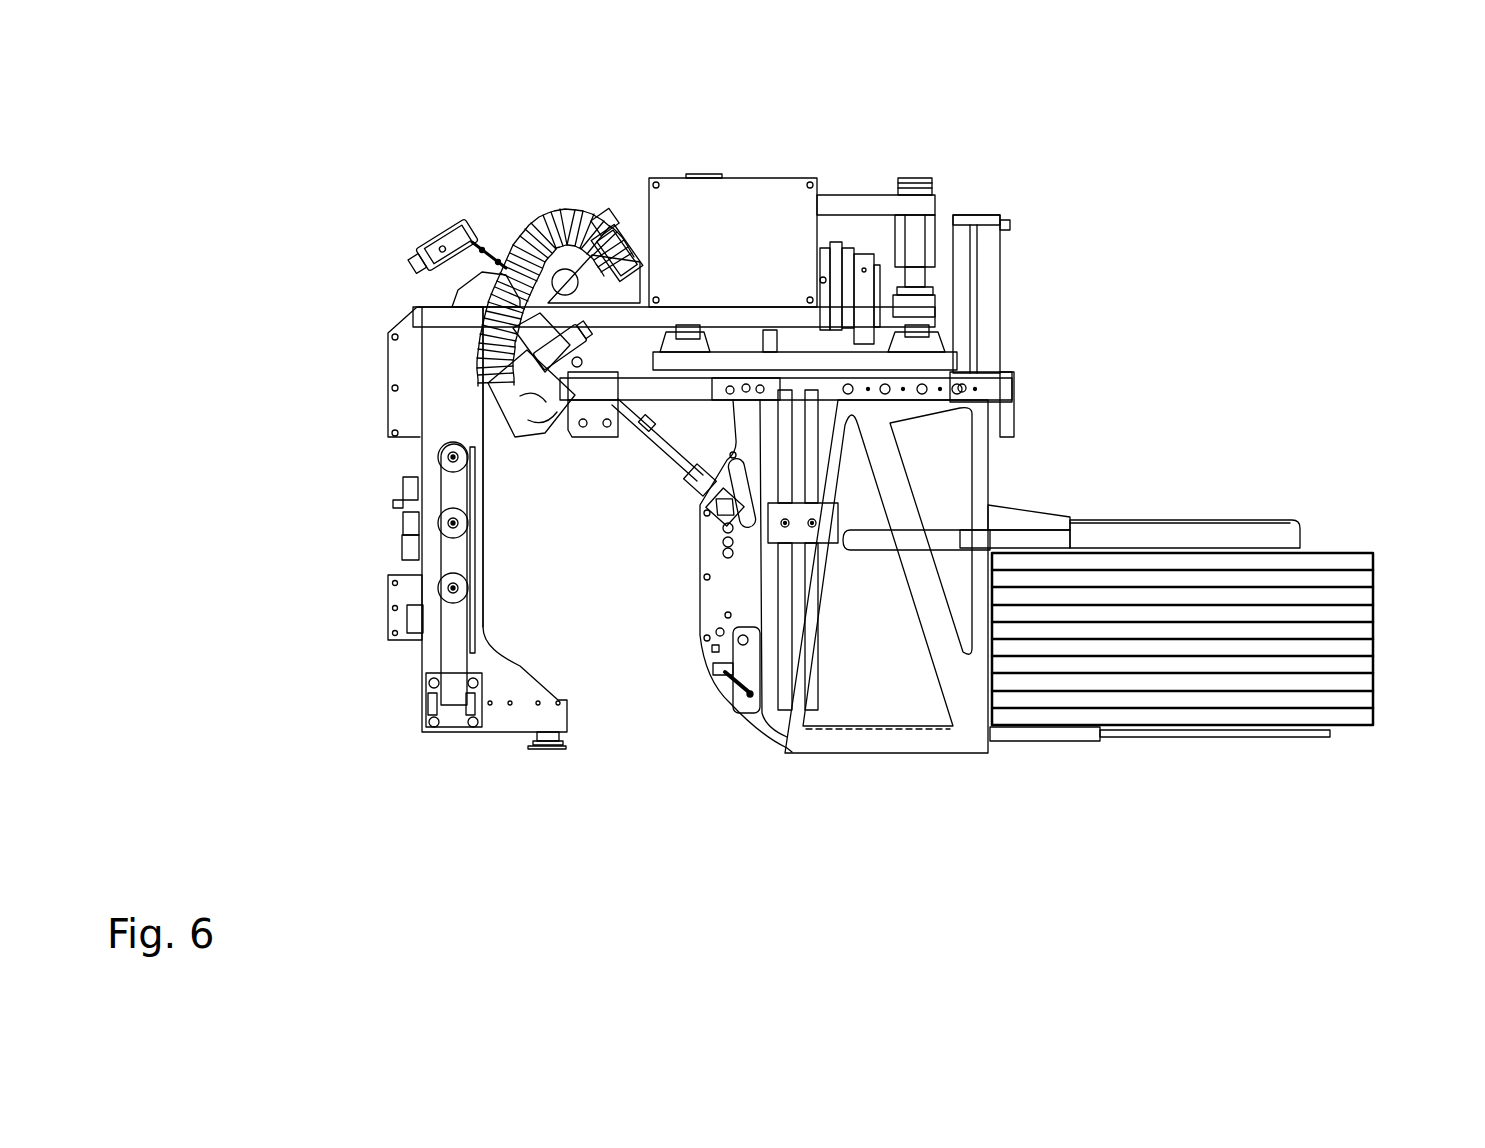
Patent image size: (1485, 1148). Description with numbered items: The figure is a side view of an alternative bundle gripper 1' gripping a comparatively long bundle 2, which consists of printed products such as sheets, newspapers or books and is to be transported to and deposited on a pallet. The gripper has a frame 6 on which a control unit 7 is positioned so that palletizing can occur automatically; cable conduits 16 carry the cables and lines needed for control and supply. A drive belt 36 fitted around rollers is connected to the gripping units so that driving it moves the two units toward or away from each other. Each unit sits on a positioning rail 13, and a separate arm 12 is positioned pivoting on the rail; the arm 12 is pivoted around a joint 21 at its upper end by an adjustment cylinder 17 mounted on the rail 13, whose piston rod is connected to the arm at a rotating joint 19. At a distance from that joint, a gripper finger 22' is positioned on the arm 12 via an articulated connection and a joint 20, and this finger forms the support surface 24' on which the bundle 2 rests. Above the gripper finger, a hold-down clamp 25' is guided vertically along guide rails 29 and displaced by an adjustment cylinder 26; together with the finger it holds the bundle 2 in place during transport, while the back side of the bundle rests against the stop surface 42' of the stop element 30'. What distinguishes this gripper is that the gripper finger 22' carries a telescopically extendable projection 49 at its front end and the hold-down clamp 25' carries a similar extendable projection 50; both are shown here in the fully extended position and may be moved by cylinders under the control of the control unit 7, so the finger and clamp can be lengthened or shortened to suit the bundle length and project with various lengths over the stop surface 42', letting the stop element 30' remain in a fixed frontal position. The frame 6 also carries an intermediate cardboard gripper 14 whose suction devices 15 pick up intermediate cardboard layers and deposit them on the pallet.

The bundle gripper 1' is at (333, 116).
The bundle 2 is at (1318, 550).
The frame 6 is at (846, 195).
The control unit 7 is at (672, 178).
The arm 12 is at (698, 597).
The positioning rail 13 is at (597, 378).
The intermediate cardboard gripper 14 is at (425, 694).
The suction device 15 is at (450, 462).
The cable conduit 16 is at (560, 227).
The adjustment cylinder 17 is at (450, 225).
The joint 19 is at (705, 505).
The joint 20 is at (740, 643).
The joint 21 is at (740, 398).
The gripper finger 22' is at (729, 729).
The support surface 24' is at (1325, 660).
The hold-down clamp 25' is at (980, 489).
The adjustment cylinder 26 is at (1000, 280).
The guide rail 29 is at (812, 447).
The stop element 30' is at (886, 618).
The drive belt 36 is at (866, 312).
The stop surface 42' is at (1057, 735).
The projection 49 is at (1240, 740).
The projection 50 is at (1155, 540).